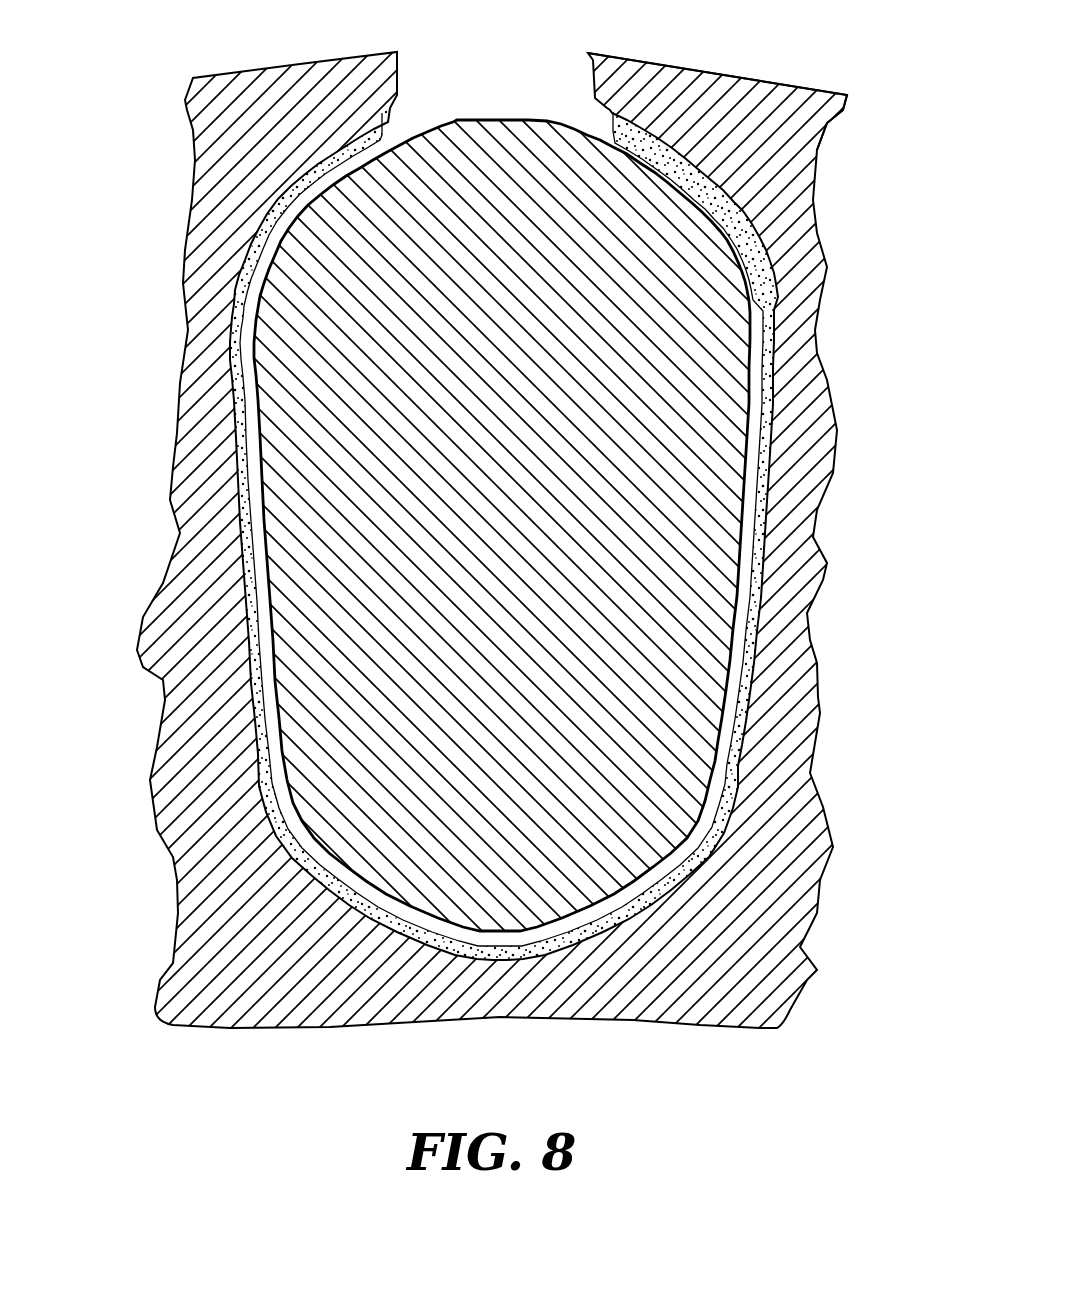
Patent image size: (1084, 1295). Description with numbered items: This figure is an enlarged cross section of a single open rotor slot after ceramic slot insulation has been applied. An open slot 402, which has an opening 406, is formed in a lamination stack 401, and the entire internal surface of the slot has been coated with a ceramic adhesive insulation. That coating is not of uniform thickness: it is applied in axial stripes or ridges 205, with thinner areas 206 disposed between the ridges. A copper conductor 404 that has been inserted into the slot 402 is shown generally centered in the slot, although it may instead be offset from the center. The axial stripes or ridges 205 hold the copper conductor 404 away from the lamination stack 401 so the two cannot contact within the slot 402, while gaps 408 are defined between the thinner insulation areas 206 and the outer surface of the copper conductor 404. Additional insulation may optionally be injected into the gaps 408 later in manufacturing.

The lamination stack 401 is at (765, 75).
The open slot 402 is at (773, 378).
The copper conductor 404 is at (657, 622).
The opening 406 is at (500, 68).
The gaps 408 is at (730, 662).
The axial stripes or ridges 205 is at (275, 203).
The thinner areas 206 is at (760, 513).